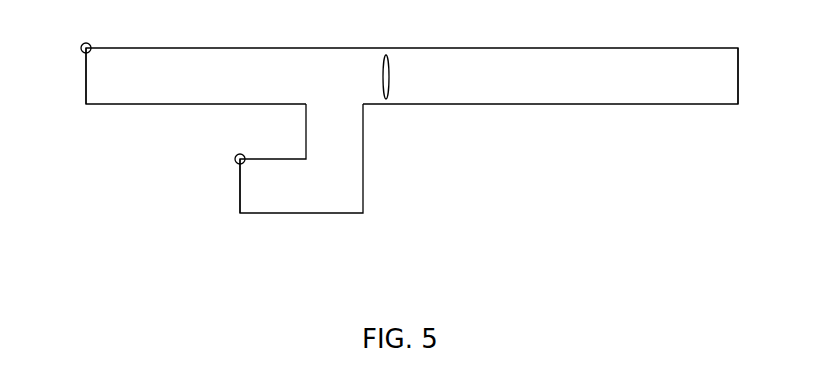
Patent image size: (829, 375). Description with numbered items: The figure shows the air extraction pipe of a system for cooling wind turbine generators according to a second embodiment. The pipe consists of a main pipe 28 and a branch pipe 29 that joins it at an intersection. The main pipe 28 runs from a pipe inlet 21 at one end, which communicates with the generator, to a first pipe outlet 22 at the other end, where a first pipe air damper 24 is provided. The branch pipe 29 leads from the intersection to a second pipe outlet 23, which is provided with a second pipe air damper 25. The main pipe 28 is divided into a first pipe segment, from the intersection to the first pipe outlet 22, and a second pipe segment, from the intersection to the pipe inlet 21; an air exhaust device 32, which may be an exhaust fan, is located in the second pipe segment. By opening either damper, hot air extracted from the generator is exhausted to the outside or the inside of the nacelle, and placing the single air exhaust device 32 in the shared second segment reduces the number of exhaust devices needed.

The pipe inlet 21 is at (737, 96).
The first pipe outlet 22 is at (90, 58).
The second pipe outlet 23 is at (243, 197).
The first pipe air damper 24 is at (85, 90).
The second pipe air damper 25 is at (240, 196).
The main pipe 28 is at (530, 57).
The branch pipe 29 is at (347, 143).
The air exhaust device 32 is at (386, 78).